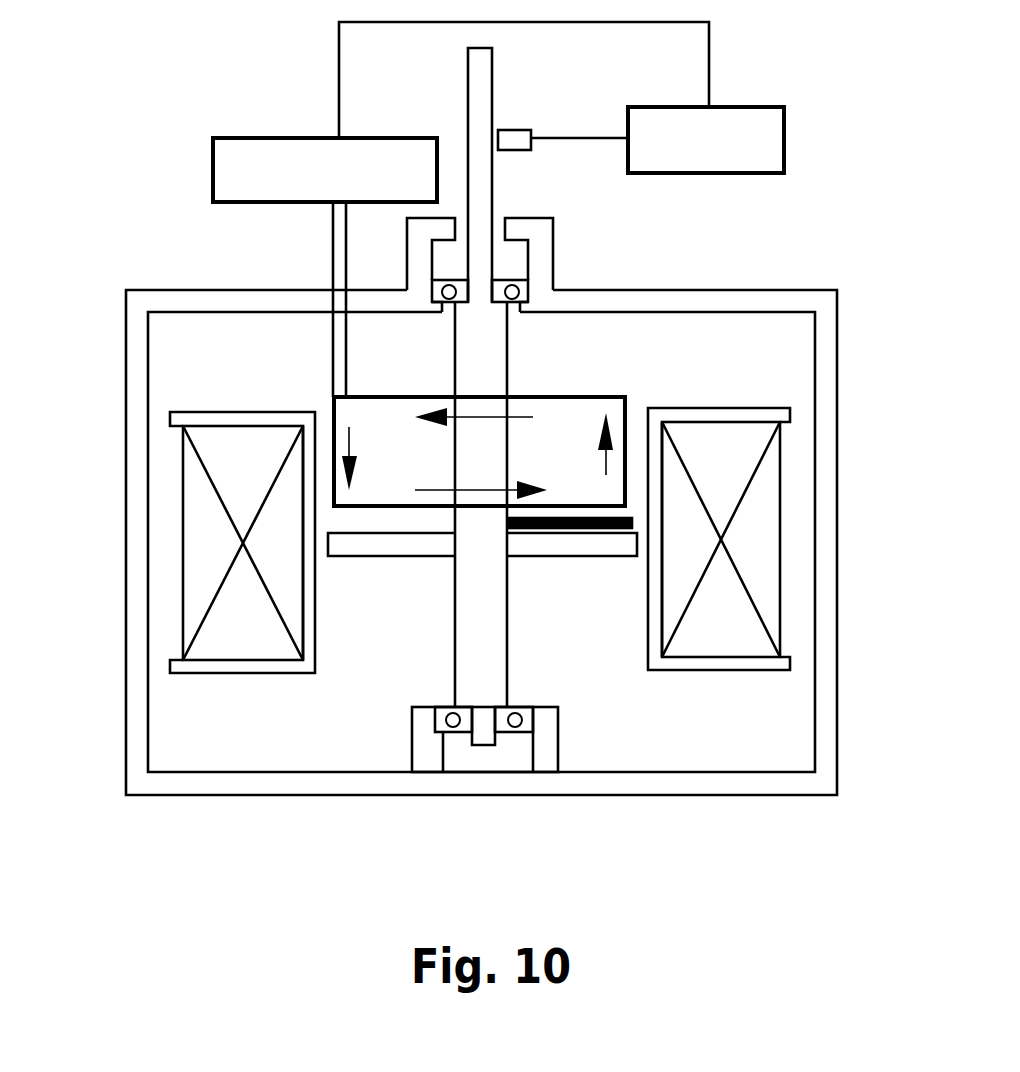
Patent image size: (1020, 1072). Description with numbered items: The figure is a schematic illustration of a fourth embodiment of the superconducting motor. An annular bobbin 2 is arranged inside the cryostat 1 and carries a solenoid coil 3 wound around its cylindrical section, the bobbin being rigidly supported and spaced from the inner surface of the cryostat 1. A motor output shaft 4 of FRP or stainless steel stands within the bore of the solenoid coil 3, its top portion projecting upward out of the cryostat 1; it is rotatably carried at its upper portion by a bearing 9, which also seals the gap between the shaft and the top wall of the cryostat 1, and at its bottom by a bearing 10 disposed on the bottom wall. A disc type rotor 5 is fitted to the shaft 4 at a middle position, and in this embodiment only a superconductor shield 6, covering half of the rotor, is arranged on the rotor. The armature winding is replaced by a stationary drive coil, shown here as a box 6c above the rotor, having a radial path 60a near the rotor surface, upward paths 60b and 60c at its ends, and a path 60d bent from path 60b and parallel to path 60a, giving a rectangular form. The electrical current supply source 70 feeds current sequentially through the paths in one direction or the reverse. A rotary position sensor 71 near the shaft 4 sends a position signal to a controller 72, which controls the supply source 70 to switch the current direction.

The cryostat 1 is at (215, 302).
The annular bobbin 2 is at (227, 418).
The solenoid coil 3 is at (237, 637).
The motor output shaft 4 is at (493, 640).
The disc type rotor 5 is at (402, 547).
The superconductor shield 6 is at (573, 532).
The heating box 6c is at (537, 395).
The bearing 9 is at (525, 283).
The bearing 10 is at (522, 733).
The radial path 60a is at (392, 506).
The path 60b is at (622, 478).
The path 60c is at (335, 408).
The path 60d is at (417, 393).
The electrical current supply source 70 is at (237, 137).
The rotary position sensor 71 is at (520, 128).
The controller 72 is at (785, 127).